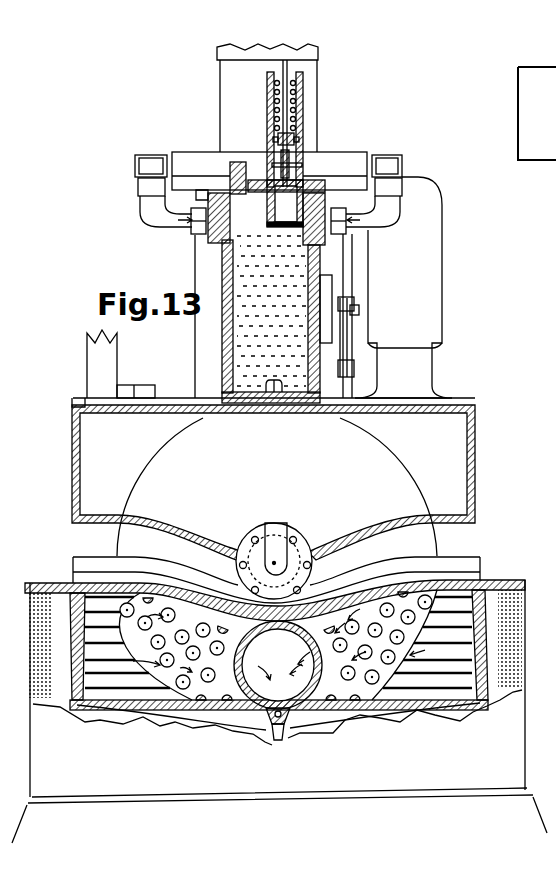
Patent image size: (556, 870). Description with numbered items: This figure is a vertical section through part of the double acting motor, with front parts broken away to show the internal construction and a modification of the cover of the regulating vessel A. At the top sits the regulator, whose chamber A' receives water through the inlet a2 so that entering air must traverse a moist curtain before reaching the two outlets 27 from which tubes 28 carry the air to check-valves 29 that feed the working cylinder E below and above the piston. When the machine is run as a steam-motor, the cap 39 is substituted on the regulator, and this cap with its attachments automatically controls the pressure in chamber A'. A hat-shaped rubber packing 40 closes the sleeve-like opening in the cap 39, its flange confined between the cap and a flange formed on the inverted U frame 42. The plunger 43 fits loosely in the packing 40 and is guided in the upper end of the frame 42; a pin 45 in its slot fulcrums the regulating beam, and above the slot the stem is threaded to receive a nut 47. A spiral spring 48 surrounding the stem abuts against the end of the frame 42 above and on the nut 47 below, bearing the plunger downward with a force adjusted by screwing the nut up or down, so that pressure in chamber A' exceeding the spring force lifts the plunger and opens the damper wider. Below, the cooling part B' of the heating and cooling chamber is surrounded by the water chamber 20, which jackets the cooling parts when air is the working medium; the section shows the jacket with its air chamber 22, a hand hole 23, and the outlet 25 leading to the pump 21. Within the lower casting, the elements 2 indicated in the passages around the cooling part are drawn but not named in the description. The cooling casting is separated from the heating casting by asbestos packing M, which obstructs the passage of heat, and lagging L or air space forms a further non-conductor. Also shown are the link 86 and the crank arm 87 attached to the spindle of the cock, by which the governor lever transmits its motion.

The hat-shaped rubber packing 40 is at (320, 191).
The inverted U frame 42 is at (273, 113).
The spiral spring 48 is at (299, 110).
The nut 47 is at (298, 142).
The pin 45 is at (278, 168).
The inlet a2 is at (240, 166).
The plunger 43 is at (285, 203).
The cap 39 is at (260, 212).
The check-valve 29 is at (268, 175).
The tube 28 is at (158, 223).
The outlet 27 is at (194, 236).
The air chamber 22 is at (403, 287).
The regulating vessel A is at (259, 321).
The chamber A' is at (271, 311).
The cylinder E is at (273, 316).
The crank arm 87 is at (346, 358).
The link 86 is at (355, 364).
The outlet 25 is at (102, 364).
The hand hole 23 is at (157, 406).
The water chamber 20 is at (273, 482).
The cooling part B' is at (277, 487).
The asbestos packing M is at (470, 567).
The lagging L is at (45, 628).
The pump 21 is at (278, 645).
The balls 2 is at (276, 642).